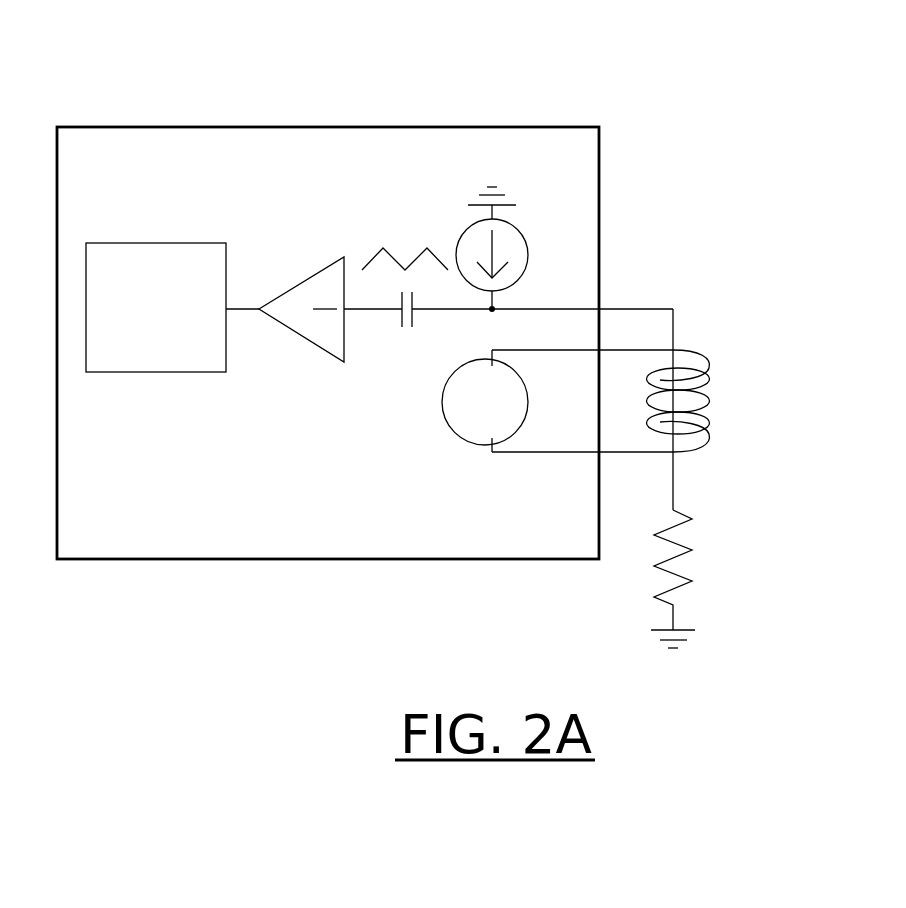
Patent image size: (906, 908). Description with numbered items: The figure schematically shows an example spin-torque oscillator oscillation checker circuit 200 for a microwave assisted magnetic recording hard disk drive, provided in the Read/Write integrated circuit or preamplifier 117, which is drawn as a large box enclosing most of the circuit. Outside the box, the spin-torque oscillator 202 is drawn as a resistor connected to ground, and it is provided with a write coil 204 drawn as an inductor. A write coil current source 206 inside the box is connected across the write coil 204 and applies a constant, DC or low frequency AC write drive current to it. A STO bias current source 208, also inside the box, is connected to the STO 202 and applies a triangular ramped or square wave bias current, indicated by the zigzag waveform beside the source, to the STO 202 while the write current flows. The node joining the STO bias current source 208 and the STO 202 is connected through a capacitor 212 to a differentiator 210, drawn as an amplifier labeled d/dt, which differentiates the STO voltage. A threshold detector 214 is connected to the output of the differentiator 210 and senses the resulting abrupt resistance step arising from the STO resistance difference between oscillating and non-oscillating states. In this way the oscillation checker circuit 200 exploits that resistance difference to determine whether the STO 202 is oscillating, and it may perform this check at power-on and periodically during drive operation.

The spin-torque oscillator oscillation checker circuit 200 is at (432, 53).
The Read/Write integrated circuit or preamplifier 117 is at (210, 163).
The threshold detector 214 is at (168, 335).
The differentiator 210 is at (327, 268).
The capacitor 212 is at (402, 322).
The STO bias current source 208 is at (519, 230).
The write coil current source 206 is at (447, 381).
The write coil 204 is at (717, 401).
The spin-torque oscillator 202 is at (699, 579).